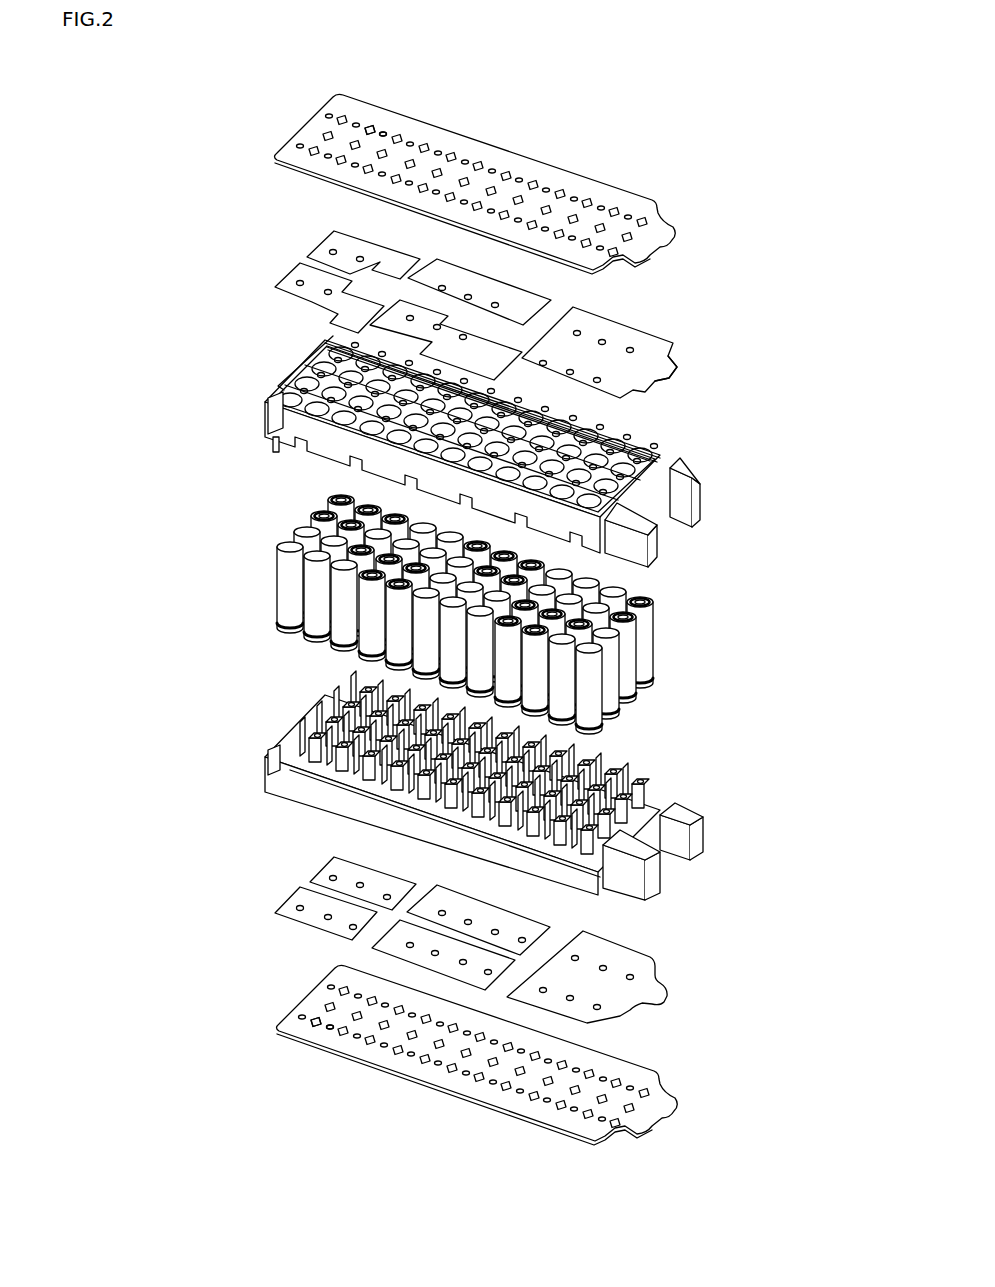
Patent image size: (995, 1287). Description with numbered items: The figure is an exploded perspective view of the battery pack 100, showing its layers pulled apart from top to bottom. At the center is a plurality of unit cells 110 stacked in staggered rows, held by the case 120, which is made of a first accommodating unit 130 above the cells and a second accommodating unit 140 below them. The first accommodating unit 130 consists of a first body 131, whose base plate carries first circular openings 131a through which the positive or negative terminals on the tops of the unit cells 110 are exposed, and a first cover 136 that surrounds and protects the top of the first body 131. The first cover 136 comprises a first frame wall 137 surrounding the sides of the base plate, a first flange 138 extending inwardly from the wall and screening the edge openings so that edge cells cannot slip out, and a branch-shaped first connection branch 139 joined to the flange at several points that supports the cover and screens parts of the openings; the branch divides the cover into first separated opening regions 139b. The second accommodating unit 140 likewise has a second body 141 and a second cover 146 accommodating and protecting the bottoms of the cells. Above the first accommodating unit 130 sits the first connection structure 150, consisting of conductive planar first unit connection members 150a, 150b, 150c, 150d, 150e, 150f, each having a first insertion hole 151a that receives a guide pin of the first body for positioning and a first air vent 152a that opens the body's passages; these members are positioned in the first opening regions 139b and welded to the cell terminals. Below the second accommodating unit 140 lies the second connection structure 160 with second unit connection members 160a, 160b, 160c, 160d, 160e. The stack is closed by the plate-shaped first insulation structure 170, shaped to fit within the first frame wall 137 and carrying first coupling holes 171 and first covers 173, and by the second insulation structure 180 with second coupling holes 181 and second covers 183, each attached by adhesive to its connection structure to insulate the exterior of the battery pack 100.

The battery pack 100 is at (222, 140).
The unit cells 110 is at (287, 584).
The case 120 is at (423, 623).
The first accommodating unit 130 is at (457, 459).
The first body 131 is at (292, 382).
The first circular openings 131a is at (277, 437).
The first cover 136 is at (280, 388).
The first frame wall 137 is at (660, 462).
The first flange 138 is at (652, 443).
The first connection branch 139 is at (555, 415).
The first separated opening regions 139b is at (672, 522).
The second accommodating unit 140 is at (436, 791).
The second body 141 is at (627, 787).
The second cover 146 is at (605, 893).
The first connection structure 150 is at (469, 295).
The first unit connection member 150a is at (323, 236).
The first unit connection member 150b is at (275, 284).
The first unit connection member 150c is at (460, 278).
The first unit connection member 150d is at (367, 322).
The first unit connection member 150e is at (647, 340).
The first unit connection member 150f is at (660, 368).
The first insertion hole 151a is at (330, 250).
The first air vent 152a is at (355, 229).
The second connection structure 160 is at (446, 927).
The second unit connection member 160a is at (323, 867).
The second unit connection member 160b is at (278, 913).
The second unit connection member 160c is at (463, 907).
The second unit connection member 160d is at (368, 948).
The second unit connection member 160e is at (650, 962).
The first insulation structure 170 is at (475, 164).
The first coupling holes 171 is at (385, 133).
The first covers 173 is at (371, 126).
The second insulation structure 180 is at (458, 1055).
The second coupling holes 181 is at (350, 1045).
The second covers 183 is at (333, 1035).